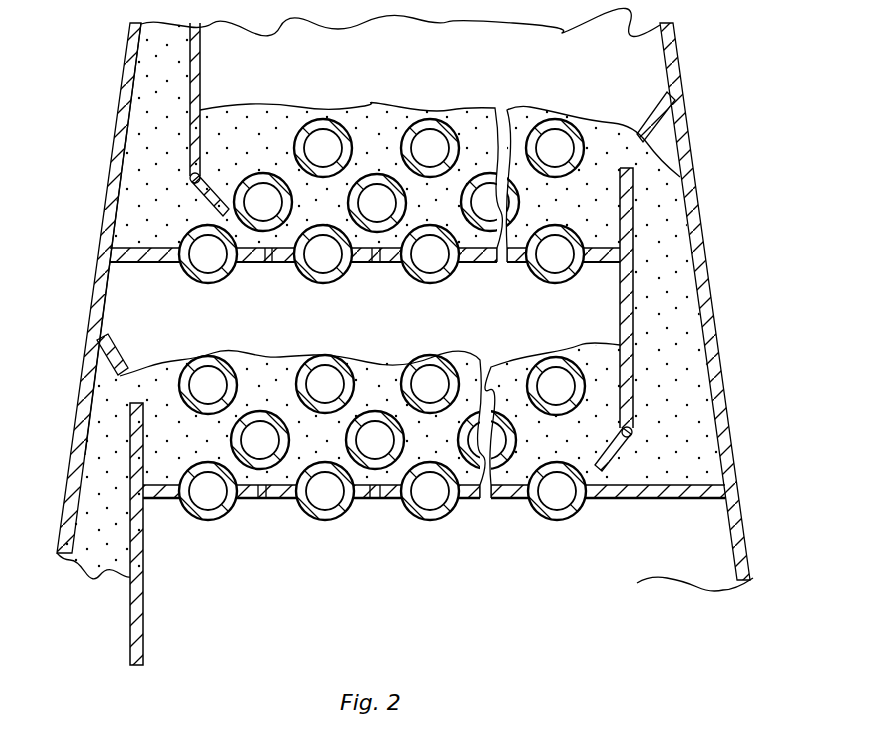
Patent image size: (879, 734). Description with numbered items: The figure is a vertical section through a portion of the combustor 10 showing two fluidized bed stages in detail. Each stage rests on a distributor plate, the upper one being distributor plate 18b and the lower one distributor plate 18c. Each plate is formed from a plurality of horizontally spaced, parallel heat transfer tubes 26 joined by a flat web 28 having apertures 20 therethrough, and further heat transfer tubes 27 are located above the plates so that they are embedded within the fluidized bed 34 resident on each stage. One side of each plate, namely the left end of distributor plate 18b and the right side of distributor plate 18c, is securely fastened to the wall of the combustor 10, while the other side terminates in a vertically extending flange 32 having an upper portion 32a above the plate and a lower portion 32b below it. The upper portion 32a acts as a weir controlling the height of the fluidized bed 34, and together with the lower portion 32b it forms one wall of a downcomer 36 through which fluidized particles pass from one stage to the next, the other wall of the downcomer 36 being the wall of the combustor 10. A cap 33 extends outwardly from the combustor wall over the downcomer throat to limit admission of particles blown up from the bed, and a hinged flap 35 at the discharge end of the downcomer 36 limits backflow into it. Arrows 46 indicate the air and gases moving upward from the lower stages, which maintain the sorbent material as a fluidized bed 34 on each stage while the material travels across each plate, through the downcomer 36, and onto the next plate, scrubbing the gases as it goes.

The combustor 10 is at (748, 316).
The distributor plate 18b is at (252, 275).
The distributor plate 18c is at (281, 516).
The apertures 20 is at (490, 264).
The heat transfer tubes 26 is at (439, 524).
The heat transfer tubes 27 is at (404, 131).
The flat web 28 is at (477, 233).
The flange 32 is at (649, 303).
The upper portion of flange 32a is at (642, 207).
The lower portion of flange 32b is at (202, 150).
The cap 33 is at (653, 117).
The fluidized bed 34 is at (690, 416).
The hinged flap 35 is at (200, 197).
The downcomer 36 is at (170, 152).
The arrows 46 is at (338, 352).